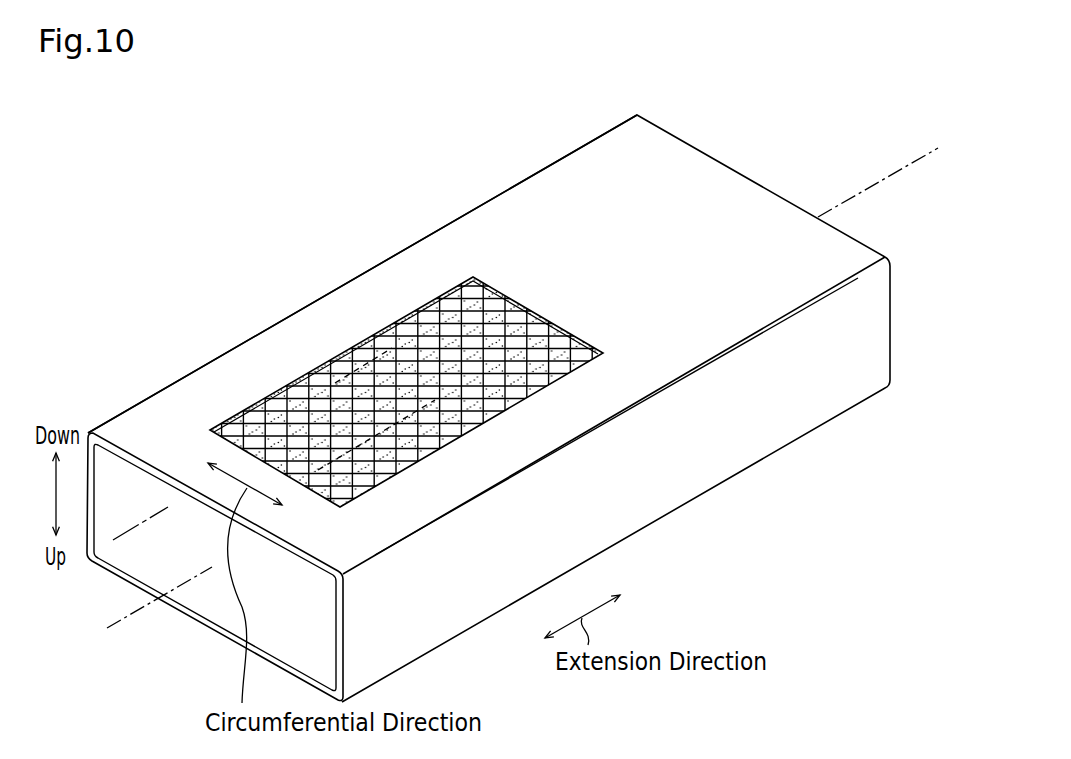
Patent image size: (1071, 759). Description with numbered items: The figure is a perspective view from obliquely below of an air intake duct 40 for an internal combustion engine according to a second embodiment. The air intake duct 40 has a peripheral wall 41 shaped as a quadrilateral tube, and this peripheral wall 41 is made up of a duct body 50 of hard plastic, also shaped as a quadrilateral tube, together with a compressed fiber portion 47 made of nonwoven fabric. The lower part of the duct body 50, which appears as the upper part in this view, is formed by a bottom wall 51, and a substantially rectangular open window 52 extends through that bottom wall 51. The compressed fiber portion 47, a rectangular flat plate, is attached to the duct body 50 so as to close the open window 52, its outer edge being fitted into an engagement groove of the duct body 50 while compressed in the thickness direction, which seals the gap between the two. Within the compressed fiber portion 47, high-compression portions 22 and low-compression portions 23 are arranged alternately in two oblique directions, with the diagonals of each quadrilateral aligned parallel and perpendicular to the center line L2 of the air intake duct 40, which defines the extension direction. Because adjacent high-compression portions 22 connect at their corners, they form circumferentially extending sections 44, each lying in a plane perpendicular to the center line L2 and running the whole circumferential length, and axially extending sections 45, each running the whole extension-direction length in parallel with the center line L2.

The air intake duct 40 is at (248, 227).
The peripheral wall 41 is at (162, 388).
The circumferentially extending section 44 is at (410, 465).
The axially extending section 45 is at (562, 345).
The compressed fiber portion 47 is at (407, 343).
The duct body 50 is at (302, 323).
The bottom wall 51 is at (753, 197).
The open window 52 is at (522, 318).
The high-compression portion 22 is at (567, 350).
The low-compression portion 23 is at (588, 340).
The center line L2 is at (913, 162).